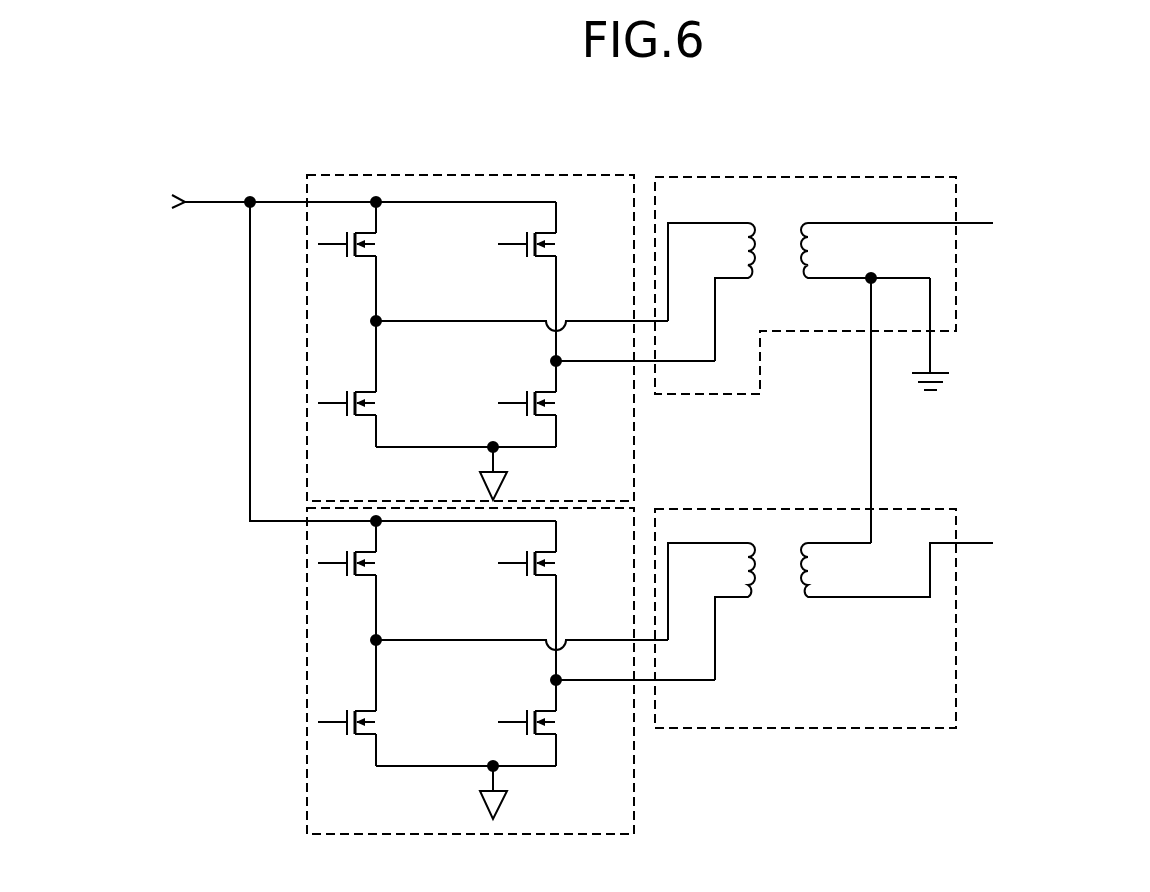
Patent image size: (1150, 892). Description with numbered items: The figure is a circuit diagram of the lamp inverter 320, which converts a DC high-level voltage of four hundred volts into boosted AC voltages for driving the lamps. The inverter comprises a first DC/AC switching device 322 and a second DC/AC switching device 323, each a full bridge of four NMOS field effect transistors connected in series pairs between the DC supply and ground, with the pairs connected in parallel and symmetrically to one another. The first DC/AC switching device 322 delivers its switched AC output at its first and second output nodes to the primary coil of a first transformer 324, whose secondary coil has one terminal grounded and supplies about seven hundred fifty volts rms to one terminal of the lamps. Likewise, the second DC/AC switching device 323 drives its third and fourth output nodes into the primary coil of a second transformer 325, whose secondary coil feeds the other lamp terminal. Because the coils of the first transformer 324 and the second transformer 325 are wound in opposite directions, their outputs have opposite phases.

The lamp inverter 320 is at (167, 121).
The first DC/AC switching device 322 is at (327, 175).
The second DC/AC switching device 323 is at (307, 710).
The first transformer 324 is at (706, 177).
The second transformer 325 is at (712, 728).